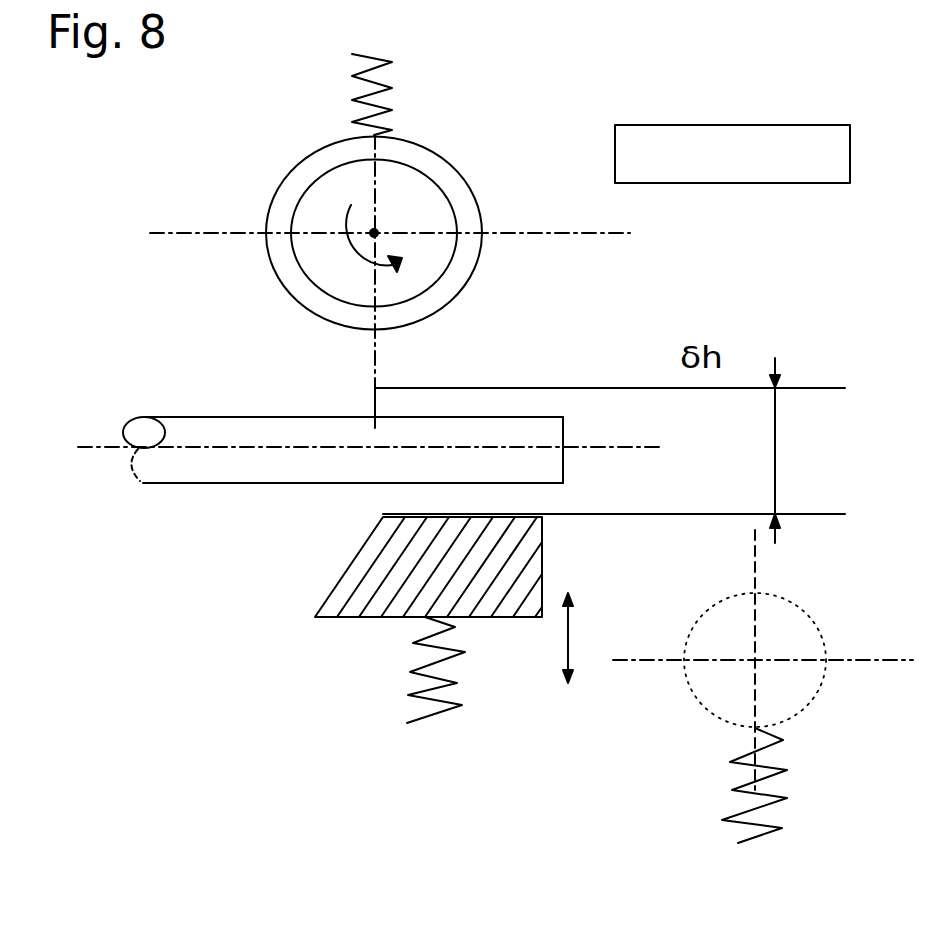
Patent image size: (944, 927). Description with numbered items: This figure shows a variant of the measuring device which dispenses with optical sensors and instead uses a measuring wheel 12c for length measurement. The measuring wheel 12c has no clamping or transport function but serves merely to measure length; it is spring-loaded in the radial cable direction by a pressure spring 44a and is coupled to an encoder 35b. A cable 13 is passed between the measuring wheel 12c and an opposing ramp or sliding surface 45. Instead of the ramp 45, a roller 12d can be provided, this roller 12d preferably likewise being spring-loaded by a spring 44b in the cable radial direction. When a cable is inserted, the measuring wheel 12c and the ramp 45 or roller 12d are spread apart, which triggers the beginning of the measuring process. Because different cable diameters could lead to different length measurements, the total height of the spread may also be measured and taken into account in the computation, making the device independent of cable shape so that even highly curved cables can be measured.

The measuring wheel 12c is at (273, 187).
The roller 12d is at (725, 679).
The sheet / flat article 13 is at (143, 473).
The encoder 35b is at (374, 233).
The spring 44a is at (400, 69).
The spring 44b is at (840, 762).
The ramp or sliding surface 45 is at (407, 552).